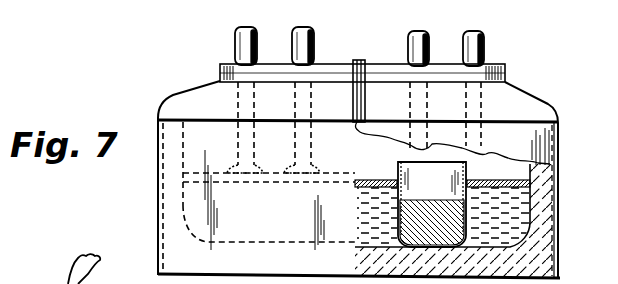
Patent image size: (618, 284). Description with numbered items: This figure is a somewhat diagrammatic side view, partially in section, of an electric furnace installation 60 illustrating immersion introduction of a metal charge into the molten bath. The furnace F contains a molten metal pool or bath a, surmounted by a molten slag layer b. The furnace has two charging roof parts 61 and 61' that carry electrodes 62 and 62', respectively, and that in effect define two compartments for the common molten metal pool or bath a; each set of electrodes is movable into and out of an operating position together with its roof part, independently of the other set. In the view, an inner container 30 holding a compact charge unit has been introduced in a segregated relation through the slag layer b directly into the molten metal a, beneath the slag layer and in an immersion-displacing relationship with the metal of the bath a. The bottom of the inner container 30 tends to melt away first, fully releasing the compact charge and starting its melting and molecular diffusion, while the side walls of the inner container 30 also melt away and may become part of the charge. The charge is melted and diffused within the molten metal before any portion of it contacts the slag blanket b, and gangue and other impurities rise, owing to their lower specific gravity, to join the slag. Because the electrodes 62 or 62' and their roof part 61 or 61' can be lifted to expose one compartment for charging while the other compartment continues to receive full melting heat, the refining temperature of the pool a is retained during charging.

The charging roof part 61 is at (347, 169).
The charging roof part 61' is at (468, 180).
The electrodes 62 is at (273, 91).
The electrodes 62' is at (446, 81).
The electric furnace installation 60 is at (559, 203).
The inner container 30 is at (398, 172).
The molten metal pool or bath a is at (503, 222).
The molten slag layer b is at (506, 183).
The furnace F is at (559, 177).